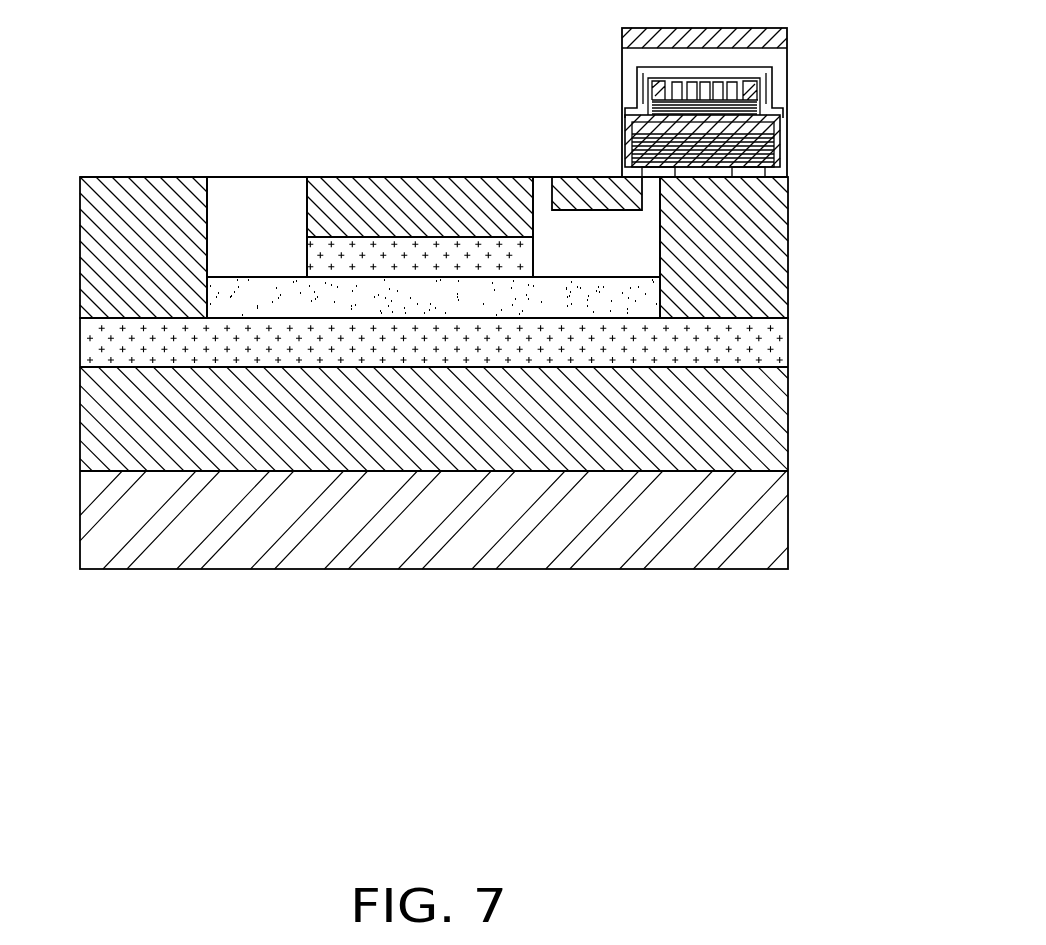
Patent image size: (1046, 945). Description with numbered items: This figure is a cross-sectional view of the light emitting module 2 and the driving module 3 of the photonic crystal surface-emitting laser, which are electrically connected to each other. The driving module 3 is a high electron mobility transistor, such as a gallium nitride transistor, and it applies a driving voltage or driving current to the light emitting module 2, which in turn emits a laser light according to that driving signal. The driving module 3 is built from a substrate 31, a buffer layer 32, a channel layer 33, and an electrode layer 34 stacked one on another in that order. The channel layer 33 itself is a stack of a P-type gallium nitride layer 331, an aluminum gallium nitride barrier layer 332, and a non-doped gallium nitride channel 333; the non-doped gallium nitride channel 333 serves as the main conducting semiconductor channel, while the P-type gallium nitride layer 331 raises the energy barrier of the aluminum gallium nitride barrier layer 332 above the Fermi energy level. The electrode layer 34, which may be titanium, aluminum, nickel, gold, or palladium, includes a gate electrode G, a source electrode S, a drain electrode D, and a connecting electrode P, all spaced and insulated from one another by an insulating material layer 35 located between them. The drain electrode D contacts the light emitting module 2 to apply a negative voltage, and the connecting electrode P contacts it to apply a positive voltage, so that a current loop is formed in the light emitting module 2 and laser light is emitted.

The light emitting module 2 is at (790, 102).
The driving module 3 is at (68, 413).
The substrate 31 is at (763, 512).
The buffer layer 32 is at (757, 435).
The channel layer 33 is at (871, 288).
The P-type gallium nitride layer 331 is at (497, 253).
The aluminum gallium nitride barrier layer 332 is at (617, 298).
The non-doped gallium nitride channel 333 is at (762, 348).
The electrode layer 34 is at (78, 262).
The insulating material layer 35 is at (255, 190).
The source electrode S is at (150, 190).
The gate electrode G is at (428, 190).
The drain electrode D is at (743, 247).
The connecting electrode P is at (585, 190).